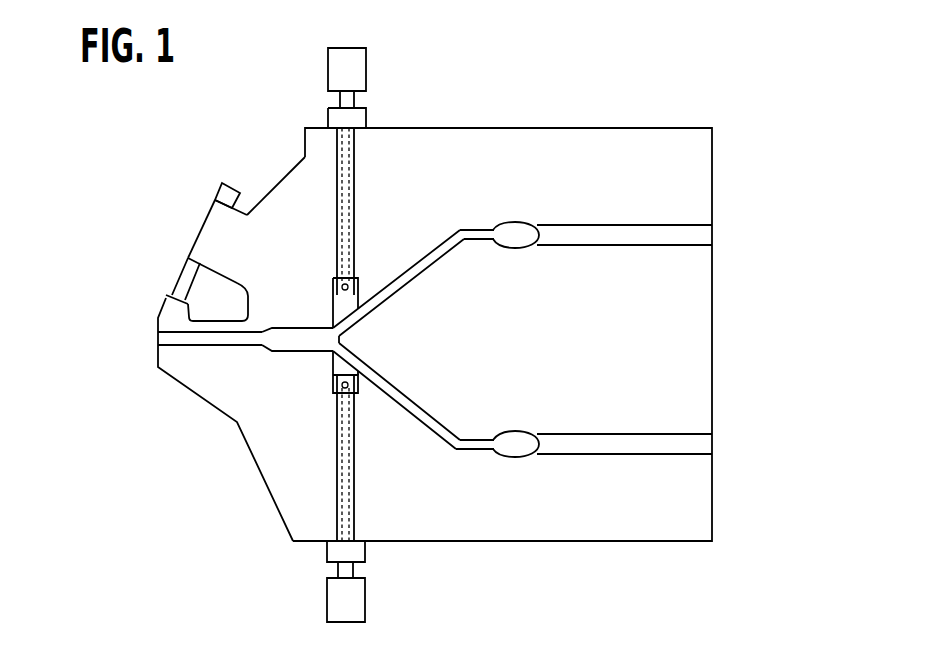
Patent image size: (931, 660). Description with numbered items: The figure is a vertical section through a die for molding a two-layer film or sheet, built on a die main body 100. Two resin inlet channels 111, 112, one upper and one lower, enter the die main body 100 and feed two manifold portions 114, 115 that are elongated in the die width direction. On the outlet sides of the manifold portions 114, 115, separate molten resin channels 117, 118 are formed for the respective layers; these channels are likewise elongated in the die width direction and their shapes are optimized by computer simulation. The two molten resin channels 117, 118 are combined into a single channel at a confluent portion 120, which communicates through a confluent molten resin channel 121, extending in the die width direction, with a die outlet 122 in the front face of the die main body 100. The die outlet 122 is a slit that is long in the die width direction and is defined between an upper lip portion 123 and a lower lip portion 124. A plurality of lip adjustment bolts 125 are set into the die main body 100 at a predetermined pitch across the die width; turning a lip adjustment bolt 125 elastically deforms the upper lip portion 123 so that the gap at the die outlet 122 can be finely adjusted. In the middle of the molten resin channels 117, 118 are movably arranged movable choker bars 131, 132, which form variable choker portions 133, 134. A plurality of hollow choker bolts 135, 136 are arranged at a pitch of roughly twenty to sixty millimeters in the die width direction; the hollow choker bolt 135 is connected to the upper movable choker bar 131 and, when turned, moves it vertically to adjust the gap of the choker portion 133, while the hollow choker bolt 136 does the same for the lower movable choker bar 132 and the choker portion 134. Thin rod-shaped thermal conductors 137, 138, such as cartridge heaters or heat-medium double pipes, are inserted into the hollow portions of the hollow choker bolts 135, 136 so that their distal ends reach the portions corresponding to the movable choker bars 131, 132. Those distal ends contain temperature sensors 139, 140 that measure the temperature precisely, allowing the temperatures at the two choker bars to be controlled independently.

The die main body 100 is at (657, 142).
The resin inlet channel 111 is at (702, 236).
The resin inlet channel 112 is at (702, 445).
The manifold portion 114 is at (520, 233).
The manifold portion 115 is at (522, 448).
The molten resin channel 117 is at (438, 246).
The molten resin channel 118 is at (438, 434).
The confluent portion 120 is at (337, 343).
The confluent molten resin channel 121 is at (298, 338).
The die outlet 122 is at (163, 338).
The upper lip portion 123 is at (172, 311).
The lower lip portion 124 is at (174, 362).
The lip adjustment bolt 125 is at (184, 281).
The movable choker bar 131 is at (361, 288).
The movable choker bar 132 is at (361, 391).
The variable choker portion 133 is at (357, 318).
The variable choker portion 134 is at (364, 361).
The hollow choker bolt 135 is at (338, 177).
The hollow choker bolt 136 is at (337, 485).
The thermal conductor 137 is at (361, 158).
The thermal conductor 138 is at (335, 512).
The temperature sensor 139 is at (334, 280).
The temperature sensor 140 is at (338, 393).